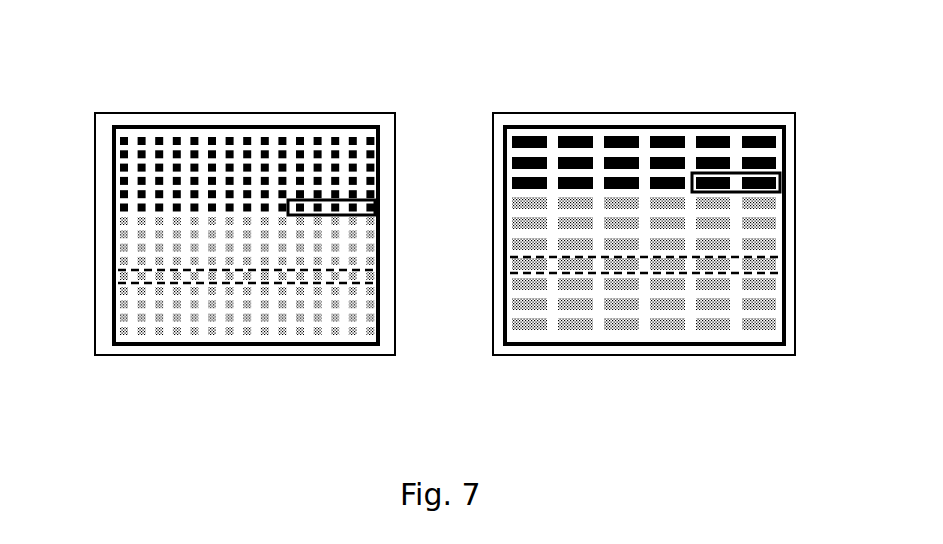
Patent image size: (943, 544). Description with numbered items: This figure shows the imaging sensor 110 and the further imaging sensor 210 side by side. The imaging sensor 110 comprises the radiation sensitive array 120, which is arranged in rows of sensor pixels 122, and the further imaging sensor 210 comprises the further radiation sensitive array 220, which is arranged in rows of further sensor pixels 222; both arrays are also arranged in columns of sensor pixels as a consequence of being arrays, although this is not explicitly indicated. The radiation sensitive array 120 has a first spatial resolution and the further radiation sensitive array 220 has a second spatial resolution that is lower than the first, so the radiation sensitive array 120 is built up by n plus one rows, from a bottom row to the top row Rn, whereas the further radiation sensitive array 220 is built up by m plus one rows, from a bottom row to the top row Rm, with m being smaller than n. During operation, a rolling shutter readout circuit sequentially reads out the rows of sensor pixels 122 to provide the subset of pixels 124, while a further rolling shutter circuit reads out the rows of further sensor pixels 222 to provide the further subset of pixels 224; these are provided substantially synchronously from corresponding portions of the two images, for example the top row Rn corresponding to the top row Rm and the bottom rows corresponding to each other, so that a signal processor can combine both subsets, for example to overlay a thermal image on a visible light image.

The imaging sensor 110 is at (207, 357).
The radiation sensitive array 120 is at (268, 345).
The rows of sensor pixels 122 is at (120, 275).
The subset of pixels 124 is at (375, 205).
The further imaging sensor 210 is at (606, 357).
The further radiation sensitive array 220 is at (667, 345).
The rows of further sensor pixels 222 is at (510, 263).
The further subset of pixels 224 is at (780, 183).
The top row of the radiation sensitive array Rn is at (120, 141).
The top row of the further radiation sensitive array Rm is at (512, 142).